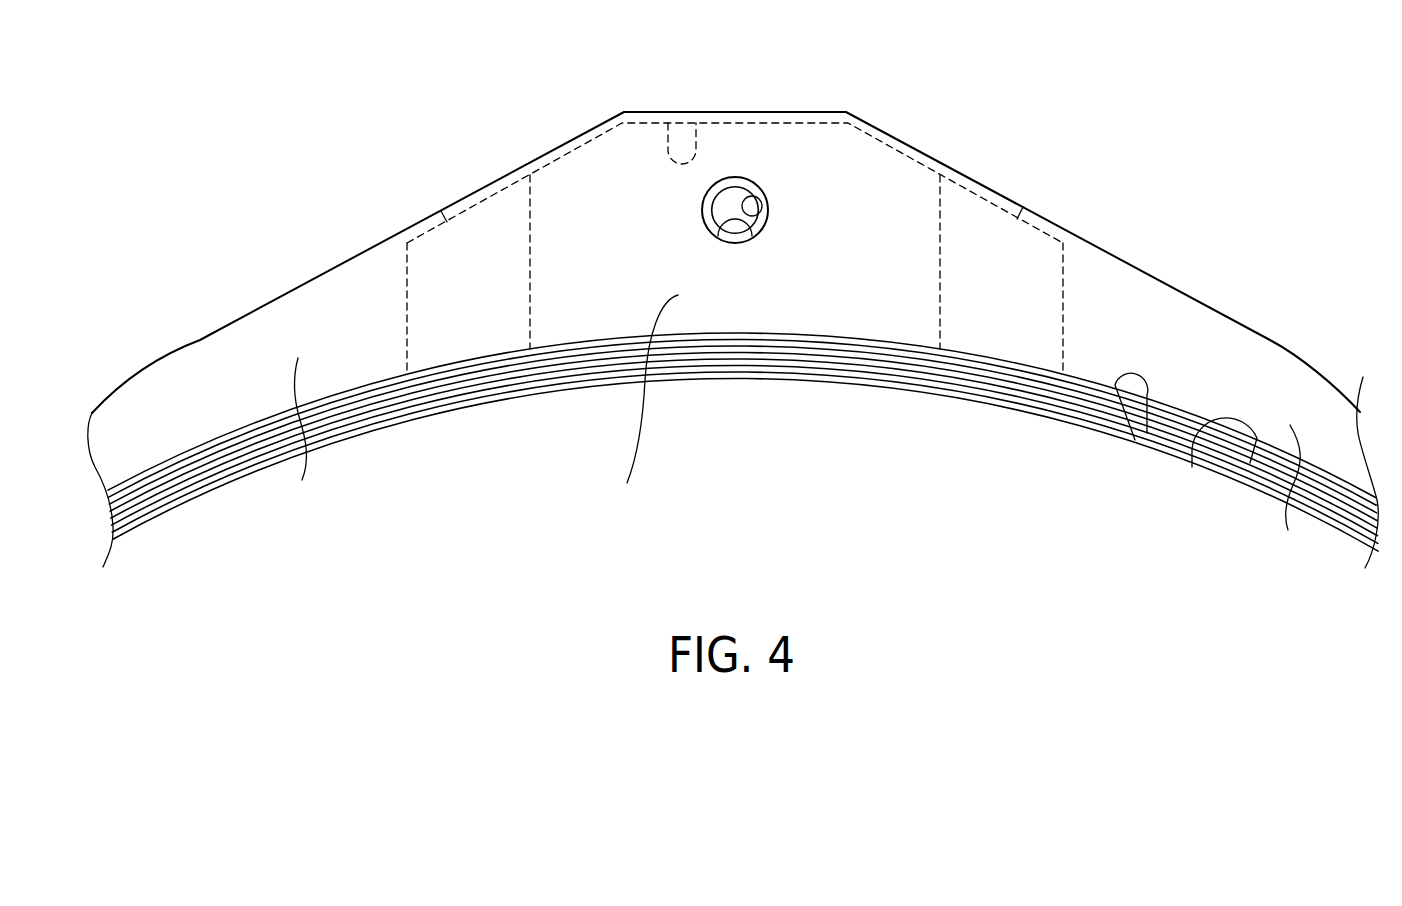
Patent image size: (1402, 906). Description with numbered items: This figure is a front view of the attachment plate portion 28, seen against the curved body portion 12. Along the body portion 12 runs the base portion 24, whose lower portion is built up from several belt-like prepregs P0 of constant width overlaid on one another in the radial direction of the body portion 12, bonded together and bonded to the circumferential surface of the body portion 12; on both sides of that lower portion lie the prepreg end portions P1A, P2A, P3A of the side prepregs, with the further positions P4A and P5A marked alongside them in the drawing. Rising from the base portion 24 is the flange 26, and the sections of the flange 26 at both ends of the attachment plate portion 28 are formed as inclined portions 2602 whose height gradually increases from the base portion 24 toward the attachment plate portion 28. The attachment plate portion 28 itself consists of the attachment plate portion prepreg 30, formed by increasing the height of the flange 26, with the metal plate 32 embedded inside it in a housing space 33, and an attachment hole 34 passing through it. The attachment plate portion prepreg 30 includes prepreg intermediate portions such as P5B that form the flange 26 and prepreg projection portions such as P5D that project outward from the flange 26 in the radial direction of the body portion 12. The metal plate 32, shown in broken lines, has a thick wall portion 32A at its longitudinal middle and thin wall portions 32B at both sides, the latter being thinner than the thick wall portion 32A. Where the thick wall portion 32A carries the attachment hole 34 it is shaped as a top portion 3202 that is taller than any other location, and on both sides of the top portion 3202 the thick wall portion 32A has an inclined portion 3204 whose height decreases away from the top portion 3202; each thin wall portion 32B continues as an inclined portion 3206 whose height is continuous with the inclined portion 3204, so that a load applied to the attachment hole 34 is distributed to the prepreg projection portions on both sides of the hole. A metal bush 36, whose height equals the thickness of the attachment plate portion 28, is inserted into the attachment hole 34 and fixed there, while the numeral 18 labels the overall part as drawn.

The body portion 12 is at (1240, 467).
The shield member 18 is at (486, 160).
The base portion 24 is at (1135, 440).
The flange 26 is at (107, 393).
The inclined portion 2602 is at (335, 268).
The attachment plate portion 28 is at (715, 112).
The attachment plate portion prepreg 30 is at (926, 150).
The metal plate 32 is at (633, 197).
The top portion 3202 is at (773, 116).
The inclined portion 3204 is at (560, 152).
The inclined portion 3206 is at (438, 208).
The thick wall portion 32A is at (622, 310).
The thin wall portion 32B is at (457, 327).
The housing space 33 is at (668, 123).
The attachment hole 34 is at (750, 243).
The metal bush 36 is at (757, 197).
The belt-like prepreg P0 is at (715, 375).
The prepreg end portion P1A is at (773, 358).
The prepreg end portion P2A is at (779, 352).
The prepreg end portion P3A is at (787, 347).
The fourth position P4A is at (792, 342).
The fifth position P5A is at (793, 337).
The prepreg intermediate portion P5B is at (788, 462).
The prepreg projection portion P5D is at (640, 406).